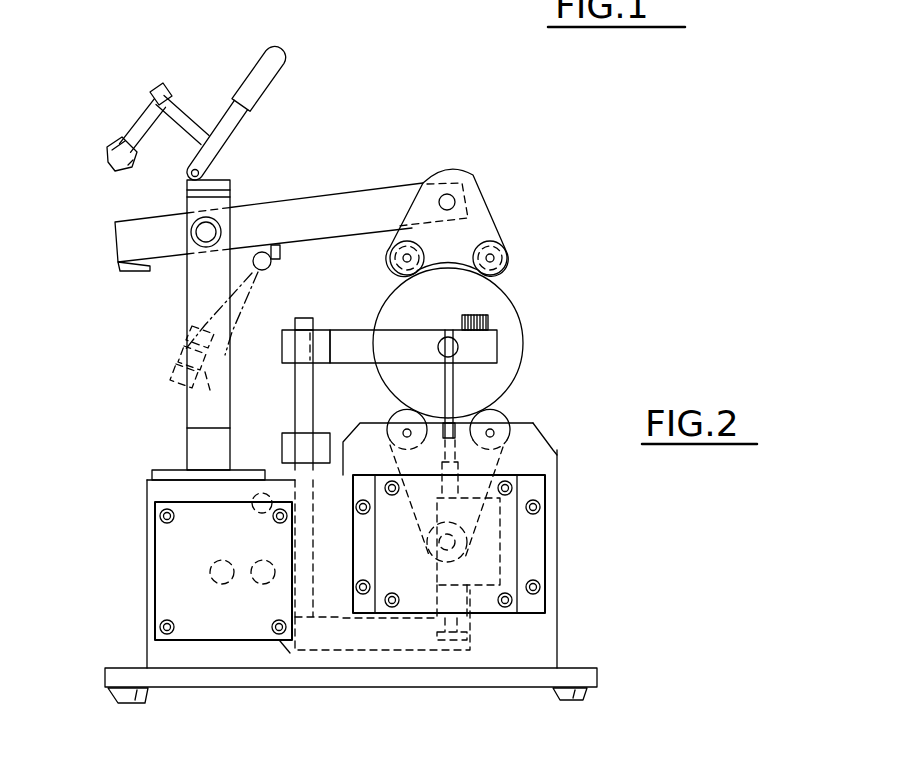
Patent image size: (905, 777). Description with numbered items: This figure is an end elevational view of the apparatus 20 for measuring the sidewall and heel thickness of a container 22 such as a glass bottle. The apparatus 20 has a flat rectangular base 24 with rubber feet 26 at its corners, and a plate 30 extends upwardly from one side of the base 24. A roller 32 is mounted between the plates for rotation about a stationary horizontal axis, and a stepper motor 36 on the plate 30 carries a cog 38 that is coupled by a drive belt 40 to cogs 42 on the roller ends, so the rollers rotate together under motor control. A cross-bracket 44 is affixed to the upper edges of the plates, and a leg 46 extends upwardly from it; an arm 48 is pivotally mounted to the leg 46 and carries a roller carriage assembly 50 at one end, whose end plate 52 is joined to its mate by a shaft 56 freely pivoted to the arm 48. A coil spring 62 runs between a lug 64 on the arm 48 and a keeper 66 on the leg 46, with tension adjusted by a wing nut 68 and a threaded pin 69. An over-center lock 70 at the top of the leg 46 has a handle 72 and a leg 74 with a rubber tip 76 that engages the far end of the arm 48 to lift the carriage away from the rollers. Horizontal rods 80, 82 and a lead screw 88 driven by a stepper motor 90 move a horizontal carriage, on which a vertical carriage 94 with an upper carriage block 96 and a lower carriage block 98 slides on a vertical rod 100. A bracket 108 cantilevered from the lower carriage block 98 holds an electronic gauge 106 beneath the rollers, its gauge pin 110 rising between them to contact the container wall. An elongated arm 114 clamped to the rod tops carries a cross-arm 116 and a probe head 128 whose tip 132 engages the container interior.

The apparatus 20 is at (620, 160).
The container 22 is at (507, 287).
The base 24 is at (580, 668).
The rubber feet 26 is at (587, 690).
The plate 30 is at (550, 620).
The roller 32 is at (395, 413).
The stepper motor 36 is at (540, 478).
The cog 38 is at (483, 555).
The drive belt 40 is at (527, 457).
The cogs 42 is at (412, 413).
The cross-bracket 44 is at (197, 440).
The leg 46 is at (187, 288).
The arm 48 is at (303, 205).
The roller carriage assembly 50 is at (487, 178).
The end plate 52 is at (482, 217).
The shaft 56 is at (447, 200).
The coil spring 62 is at (270, 283).
The lug 64 is at (285, 244).
The keeper 66 is at (185, 350).
The wing nut 68 is at (185, 365).
The threaded pin 69 is at (190, 330).
The over-center lock 70 is at (278, 45).
The handle 72 is at (272, 80).
The leg 74 is at (140, 125).
The rubber tip 76 is at (108, 155).
The rod 80 is at (255, 513).
The rod 82 is at (270, 560).
The lead screw 88 is at (212, 567).
The stepper motor 90 is at (167, 602).
The vertical carriage 94 is at (272, 341).
The upper carriage block 96 is at (283, 443).
The lower carriage block 98 is at (287, 643).
The vertical rod 100 is at (296, 380).
The electronic gauge 106 is at (503, 560).
The bracket 108 is at (400, 642).
The gauge pin 110 is at (537, 432).
The elongated arm 114 is at (320, 337).
The cross-arm 116 is at (407, 340).
The probe head 128 is at (497, 367).
The tip 132 is at (500, 373).